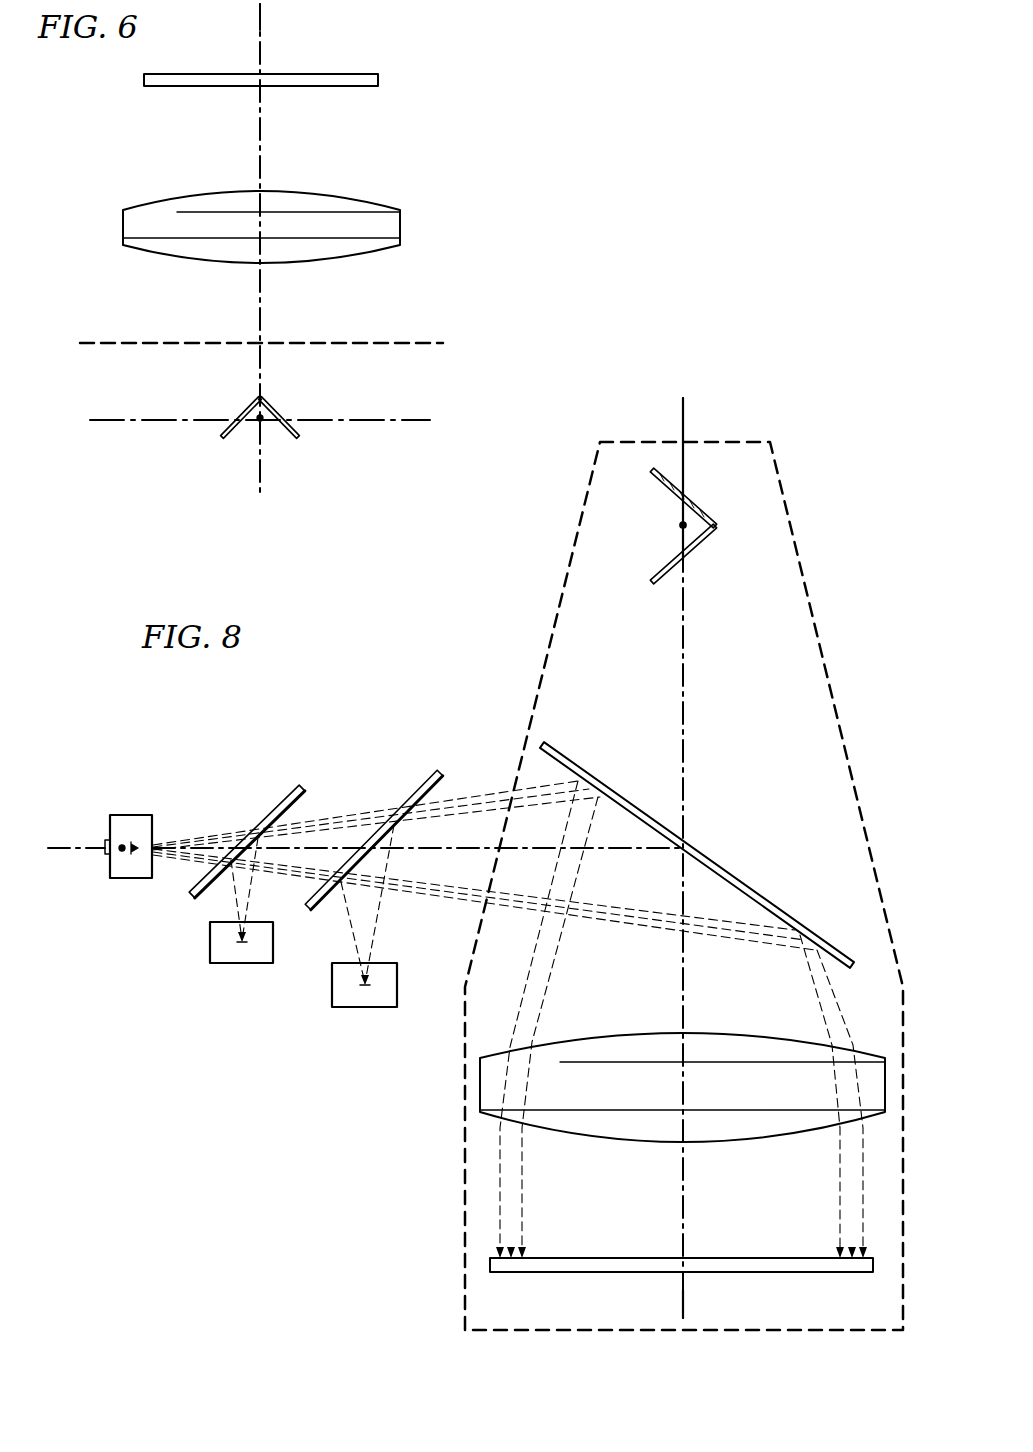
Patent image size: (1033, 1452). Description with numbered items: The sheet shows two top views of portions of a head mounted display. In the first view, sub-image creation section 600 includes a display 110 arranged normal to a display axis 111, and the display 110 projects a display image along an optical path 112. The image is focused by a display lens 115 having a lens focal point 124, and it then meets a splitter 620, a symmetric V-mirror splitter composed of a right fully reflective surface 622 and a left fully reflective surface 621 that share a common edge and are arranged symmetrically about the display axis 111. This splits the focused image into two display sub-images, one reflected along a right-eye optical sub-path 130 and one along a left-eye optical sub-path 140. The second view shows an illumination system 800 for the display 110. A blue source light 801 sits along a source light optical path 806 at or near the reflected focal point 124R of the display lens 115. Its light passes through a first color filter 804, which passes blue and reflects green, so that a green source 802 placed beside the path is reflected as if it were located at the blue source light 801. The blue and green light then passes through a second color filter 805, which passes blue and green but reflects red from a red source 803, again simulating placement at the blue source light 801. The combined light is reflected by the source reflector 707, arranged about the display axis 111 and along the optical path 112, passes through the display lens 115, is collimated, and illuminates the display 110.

In FIG. 6, the display 110 is at (290, 72).
In FIG. 8, the display 110 is at (593, 1257).
In FIG. 6, the display axis 111 is at (258, 22).
In FIG. 8, the display axis 111 is at (684, 1297).
In FIG. 6, the optical path 112 is at (263, 146).
In FIG. 8, the optical path 112 is at (684, 1196).
In FIG. 6, the display lens 115 is at (123, 226).
In FIG. 8, the display lens 115 is at (575, 1143).
In FIG. 6, the lens focal point 124 is at (266, 424).
In FIG. 8, the lens focal point 124 is at (674, 524).
In FIG. 8, the reflected focal point 124R is at (119, 856).
In FIG. 6, the right-eye optical sub-path 130 is at (400, 418).
In FIG. 6, the left-eye optical sub-path 140 is at (110, 418).
In FIG. 6, the sub-image creation section 600 is at (464, 181).
In FIG. 6, the splitter 620 is at (264, 465).
In FIG. 6, the left fully reflective surface 621 is at (228, 446).
In FIG. 6, the right fully reflective surface 622 is at (292, 446).
In FIG. 8, the source reflector 707 is at (717, 862).
In FIG. 8, the illumination system 800 is at (221, 714).
In FIG. 8, the blue source light 801 is at (742, 441).
In FIG. 8, the green source 802 is at (233, 963).
In FIG. 8, the red source 803 is at (357, 1007).
In FIG. 8, the first color filter 804 is at (273, 813).
In FIG. 8, the second color filter 805 is at (423, 788).
In FIG. 8, the source light optical path 806 is at (205, 843).